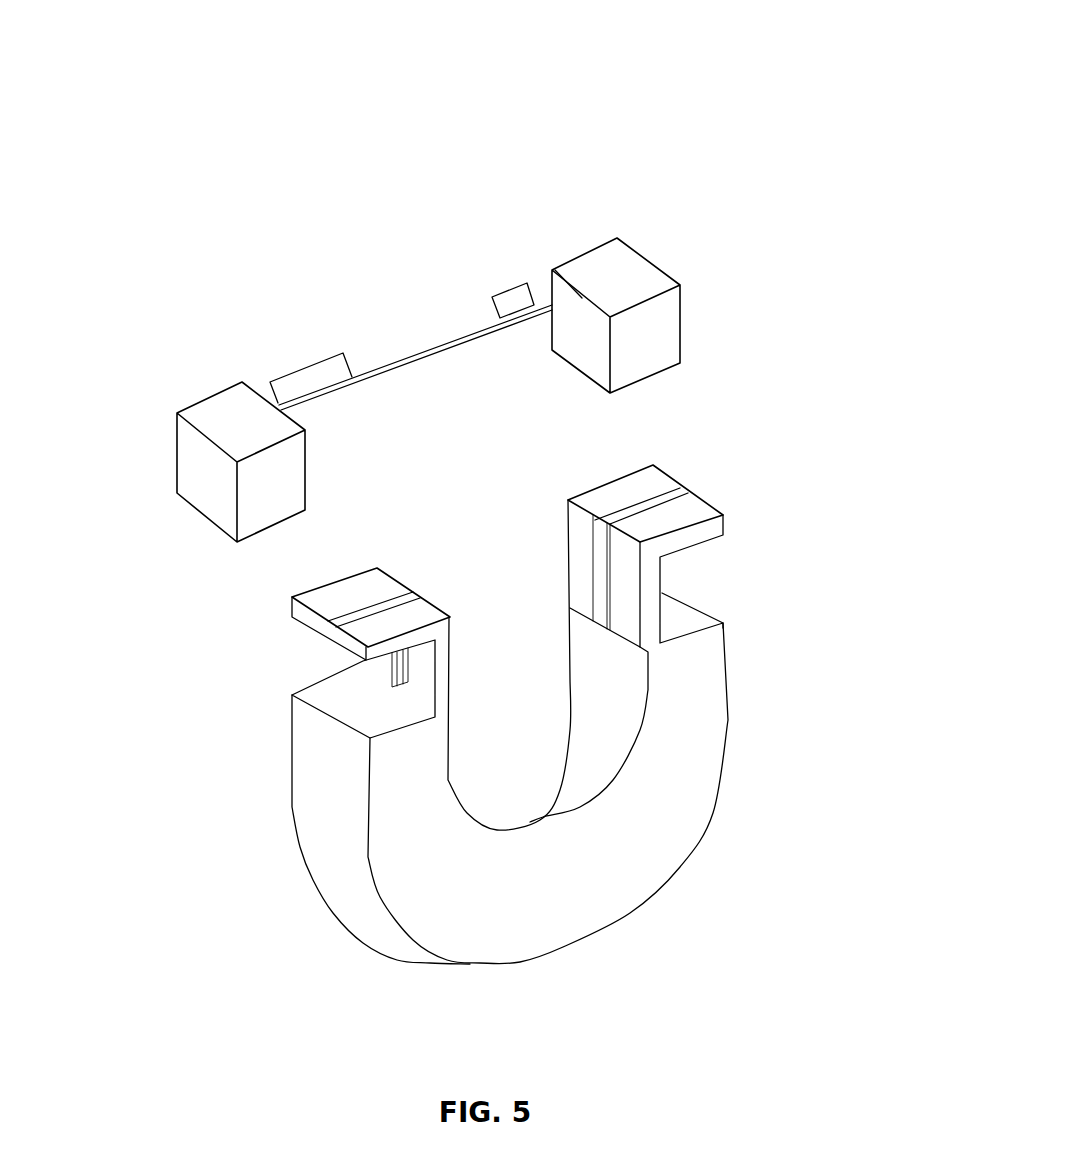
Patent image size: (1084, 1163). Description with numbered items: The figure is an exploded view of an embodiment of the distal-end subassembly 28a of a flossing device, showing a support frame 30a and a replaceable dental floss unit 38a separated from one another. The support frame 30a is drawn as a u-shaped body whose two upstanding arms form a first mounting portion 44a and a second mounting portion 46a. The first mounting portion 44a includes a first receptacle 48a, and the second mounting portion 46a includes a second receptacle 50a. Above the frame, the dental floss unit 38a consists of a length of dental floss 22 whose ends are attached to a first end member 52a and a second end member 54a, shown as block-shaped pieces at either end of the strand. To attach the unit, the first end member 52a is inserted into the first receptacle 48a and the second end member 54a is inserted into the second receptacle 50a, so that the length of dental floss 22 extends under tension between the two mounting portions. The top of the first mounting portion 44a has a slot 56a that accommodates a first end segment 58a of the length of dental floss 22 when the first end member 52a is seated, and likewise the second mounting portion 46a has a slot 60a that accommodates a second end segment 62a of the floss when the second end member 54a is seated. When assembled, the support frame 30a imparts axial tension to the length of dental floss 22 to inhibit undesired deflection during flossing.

The distal-end subassembly 28a is at (203, 117).
The dental floss unit 38a is at (602, 142).
The length of dental floss 22 is at (435, 352).
The first end member 52a is at (217, 397).
The second end member 54a is at (650, 262).
The first end segment 58a is at (307, 365).
The second end segment 62a is at (525, 280).
The support frame 30a is at (795, 688).
The first mounting portion 44a is at (245, 600).
The second mounting portion 46a is at (745, 425).
The slot 56a is at (365, 605).
The slot 60a is at (643, 500).
The first receptacle 48a is at (272, 681).
The second receptacle 50a is at (710, 575).